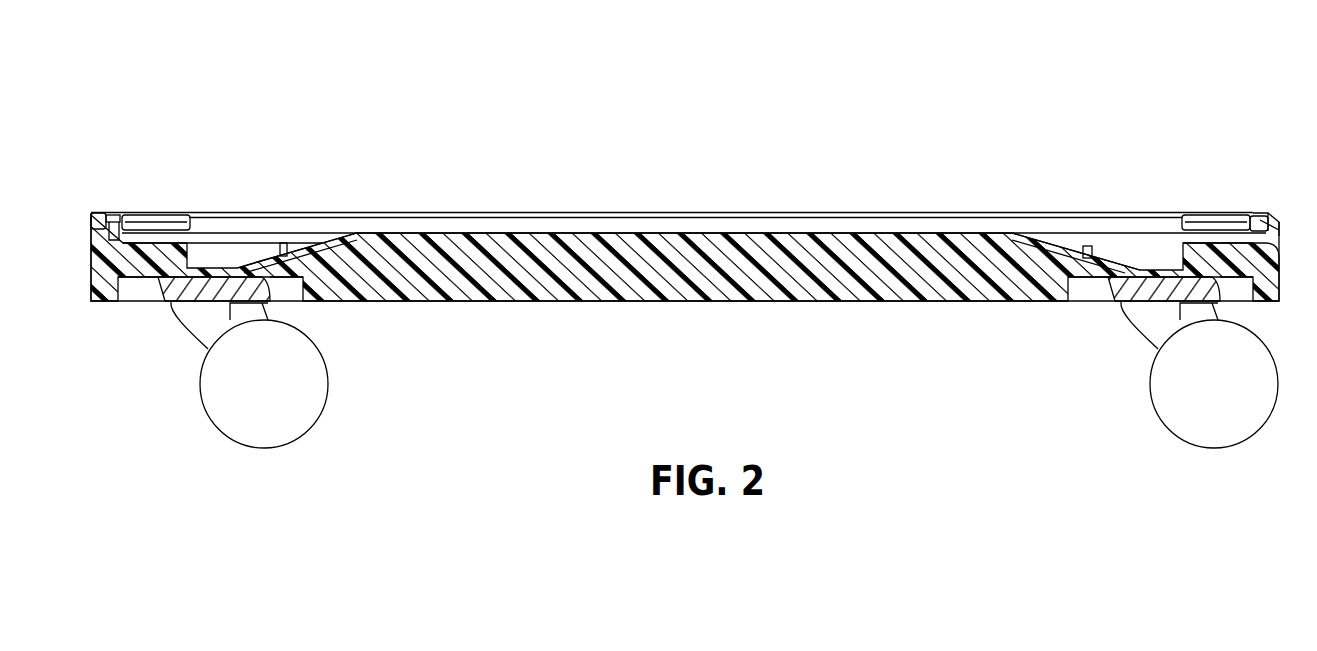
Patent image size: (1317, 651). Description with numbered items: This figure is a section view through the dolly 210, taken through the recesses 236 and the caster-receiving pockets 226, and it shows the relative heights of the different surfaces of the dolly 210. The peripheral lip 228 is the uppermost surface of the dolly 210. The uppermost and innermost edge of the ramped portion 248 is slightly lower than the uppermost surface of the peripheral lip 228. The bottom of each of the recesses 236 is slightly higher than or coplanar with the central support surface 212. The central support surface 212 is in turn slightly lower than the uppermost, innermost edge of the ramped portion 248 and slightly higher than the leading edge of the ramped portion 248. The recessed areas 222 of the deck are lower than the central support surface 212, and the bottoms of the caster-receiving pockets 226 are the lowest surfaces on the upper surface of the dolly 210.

The dolly 210 is at (305, 76).
The central support surface 212 is at (605, 233).
The recessed areas 222 is at (165, 230).
The caster-receiving pockets 226 is at (1113, 246).
The peripheral lip 228 is at (98, 213).
The recesses 236 is at (119, 221).
The ramped portion 248 is at (1271, 218).